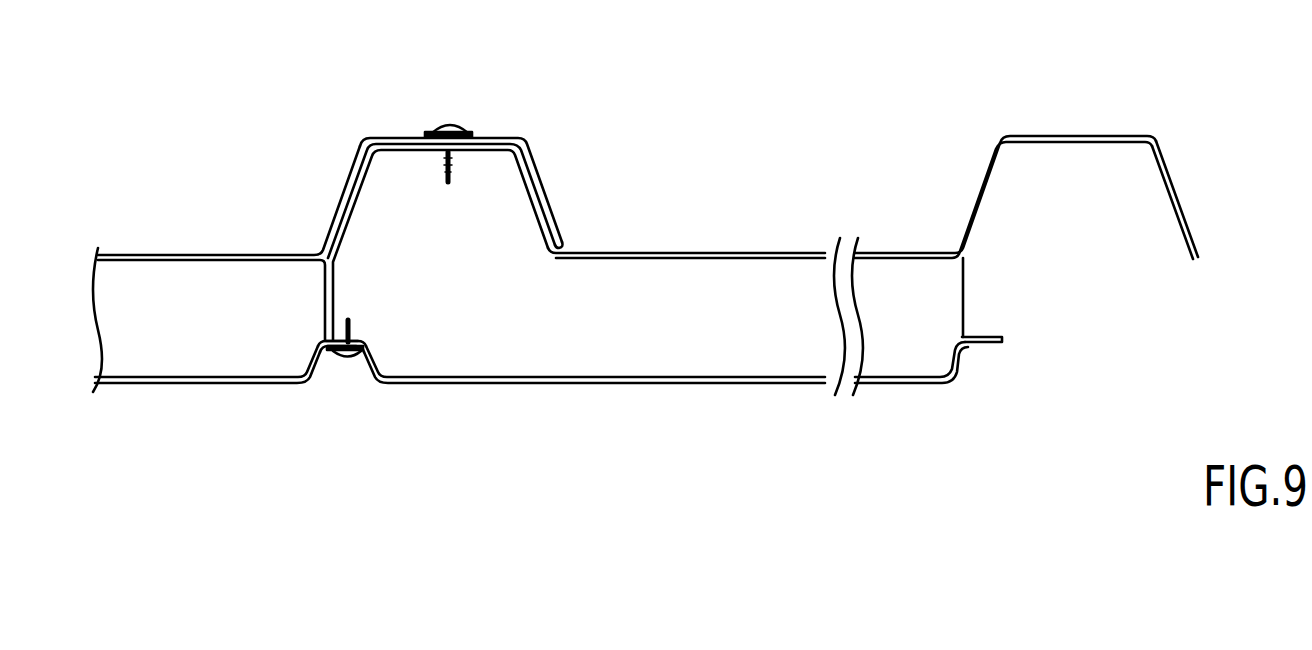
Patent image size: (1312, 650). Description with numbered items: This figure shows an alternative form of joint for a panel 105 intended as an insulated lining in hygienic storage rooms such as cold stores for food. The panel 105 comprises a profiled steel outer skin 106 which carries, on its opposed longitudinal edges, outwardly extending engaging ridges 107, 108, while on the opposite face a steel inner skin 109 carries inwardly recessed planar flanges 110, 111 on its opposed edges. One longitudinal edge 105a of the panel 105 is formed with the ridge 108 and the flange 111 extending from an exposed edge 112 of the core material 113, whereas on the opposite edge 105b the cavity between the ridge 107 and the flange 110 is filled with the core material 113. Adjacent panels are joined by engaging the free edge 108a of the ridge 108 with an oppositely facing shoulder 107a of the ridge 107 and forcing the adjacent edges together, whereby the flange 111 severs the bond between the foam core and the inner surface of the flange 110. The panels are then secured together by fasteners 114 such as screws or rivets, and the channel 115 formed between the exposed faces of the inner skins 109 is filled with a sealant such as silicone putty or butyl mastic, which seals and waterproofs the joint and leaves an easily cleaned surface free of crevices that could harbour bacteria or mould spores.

The panel 105 is at (766, 195).
The longitudinal edge 105a is at (1150, 137).
The opposite edge 105b is at (350, 207).
The profiled steel outer skin 106 is at (882, 252).
The engaging ridge 107 is at (490, 148).
The shoulder 107a is at (546, 223).
The engaging ridge 108 is at (378, 139).
The free edge 108a is at (540, 167).
The steel inner skin 109 is at (750, 383).
The inwardly recessed planar flange 110 is at (357, 365).
The inwardly recessed planar flange 111 is at (358, 338).
The exposed edge 112 is at (963, 298).
The core material 113 is at (642, 340).
The fasteners 114 is at (447, 122).
The channel 115 is at (348, 372).